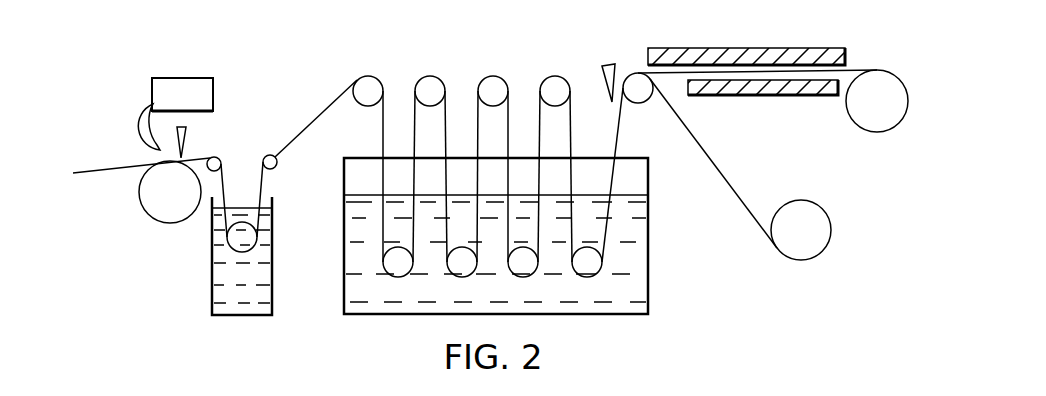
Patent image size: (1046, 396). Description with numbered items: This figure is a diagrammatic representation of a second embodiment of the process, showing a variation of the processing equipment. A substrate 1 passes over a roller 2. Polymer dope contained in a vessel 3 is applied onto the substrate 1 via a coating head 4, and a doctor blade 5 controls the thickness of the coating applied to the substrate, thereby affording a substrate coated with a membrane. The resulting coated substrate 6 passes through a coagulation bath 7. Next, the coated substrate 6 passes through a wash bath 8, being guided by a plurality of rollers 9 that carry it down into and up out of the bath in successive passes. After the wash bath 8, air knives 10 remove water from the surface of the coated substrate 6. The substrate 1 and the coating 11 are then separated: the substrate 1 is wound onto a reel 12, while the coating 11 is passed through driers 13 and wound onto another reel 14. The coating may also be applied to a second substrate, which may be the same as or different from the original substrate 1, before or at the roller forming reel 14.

The substrate 1 is at (116, 173).
The roller 2 is at (163, 210).
The vessel 3 is at (168, 85).
The coating head 4 is at (148, 137).
The doctor blade 5 is at (183, 138).
The coated substrate 6 is at (201, 157).
The coagulation bath 7 is at (272, 283).
The wash bath 8 is at (648, 295).
The rollers 9 is at (421, 83).
The air knives 10 is at (613, 62).
The coating 11 is at (762, 47).
The reel 12 is at (818, 237).
The driers 13 is at (724, 47).
The reel 14 is at (884, 110).